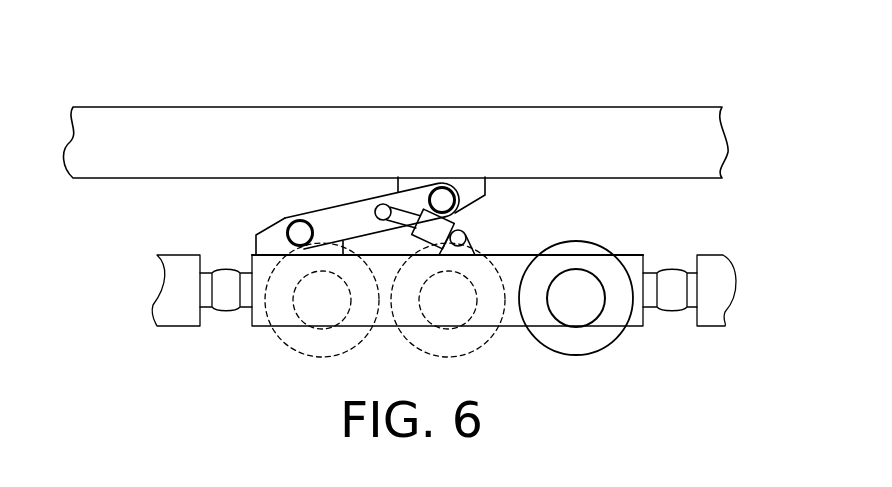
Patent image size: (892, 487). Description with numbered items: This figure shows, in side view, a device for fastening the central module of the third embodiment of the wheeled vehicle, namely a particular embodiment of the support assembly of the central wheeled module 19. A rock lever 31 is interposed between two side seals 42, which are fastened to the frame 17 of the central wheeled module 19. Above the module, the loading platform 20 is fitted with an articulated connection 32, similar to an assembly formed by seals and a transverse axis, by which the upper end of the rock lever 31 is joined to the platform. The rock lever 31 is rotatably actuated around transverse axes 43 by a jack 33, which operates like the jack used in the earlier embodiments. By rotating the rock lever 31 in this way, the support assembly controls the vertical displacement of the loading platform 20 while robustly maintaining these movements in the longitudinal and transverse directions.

The loading platform 20 is at (636, 124).
The central wheeled module 19 is at (258, 370).
The frame 17 is at (638, 250).
The side seals 42 is at (266, 232).
The rock lever 31 is at (355, 212).
The transverse axes 43 is at (296, 212).
The articulated connection 32 is at (463, 178).
The jack 33 is at (466, 221).